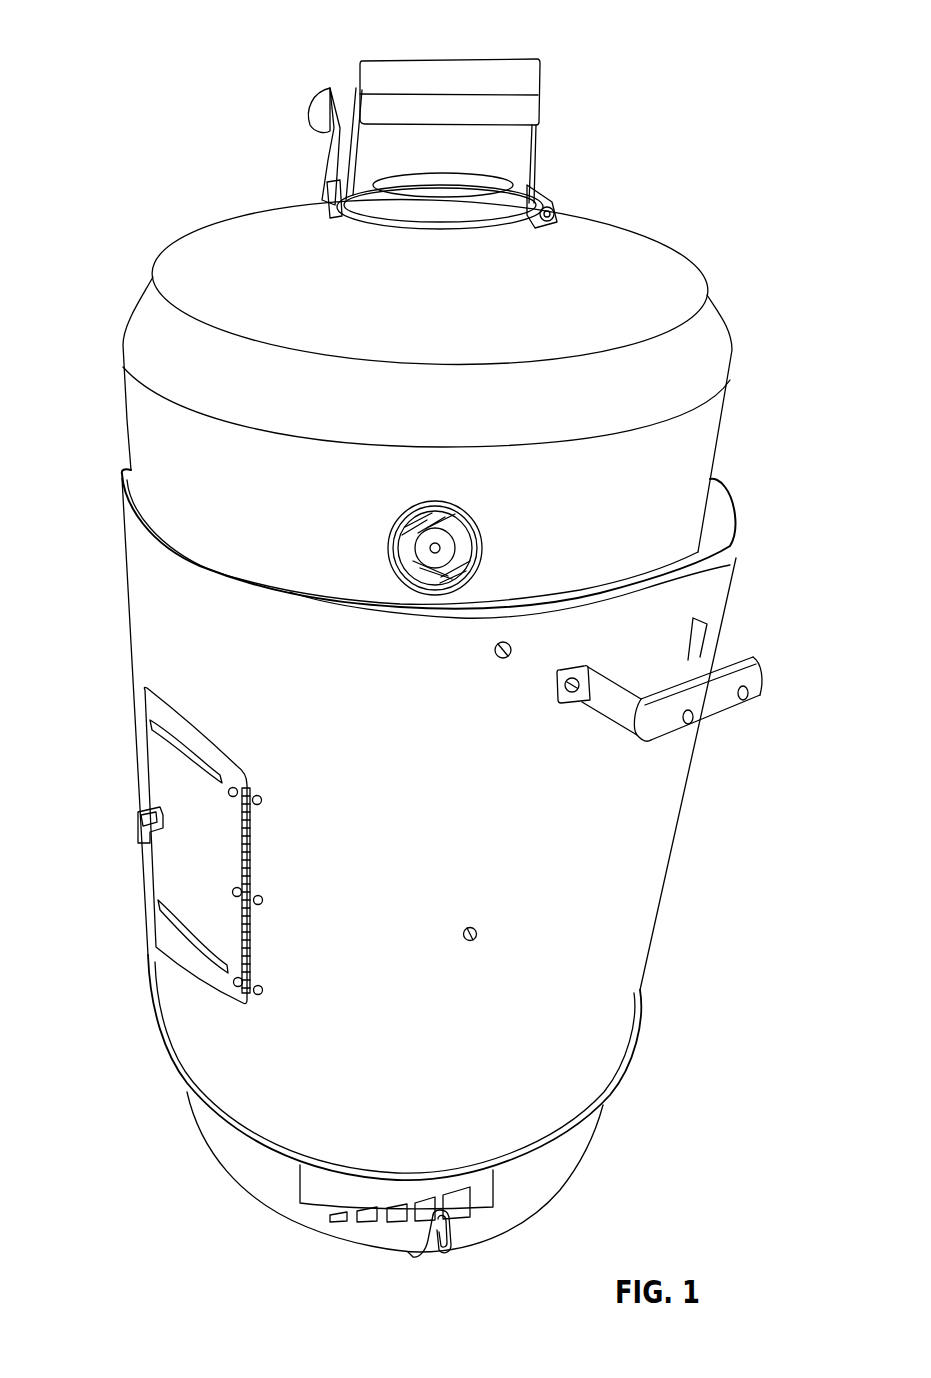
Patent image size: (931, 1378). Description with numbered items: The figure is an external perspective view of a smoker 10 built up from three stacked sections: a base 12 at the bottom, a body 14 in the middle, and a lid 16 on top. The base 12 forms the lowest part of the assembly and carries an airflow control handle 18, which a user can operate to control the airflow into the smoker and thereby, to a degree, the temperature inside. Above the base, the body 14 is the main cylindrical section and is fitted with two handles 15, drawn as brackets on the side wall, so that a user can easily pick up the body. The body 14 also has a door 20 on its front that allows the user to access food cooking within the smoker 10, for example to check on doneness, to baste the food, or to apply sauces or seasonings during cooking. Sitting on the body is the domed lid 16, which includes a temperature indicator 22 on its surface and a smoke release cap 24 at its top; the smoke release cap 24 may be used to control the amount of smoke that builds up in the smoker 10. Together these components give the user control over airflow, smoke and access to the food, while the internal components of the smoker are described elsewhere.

The smoker 10 is at (168, 64).
The base 12 is at (258, 1185).
The body 14 is at (647, 895).
The handles 15 is at (750, 673).
The lid 16 is at (725, 342).
The airflow control handle 18 is at (452, 1237).
The door 20 is at (160, 765).
The temperature indicator 22 is at (414, 521).
The smoke release cap 24 is at (442, 73).